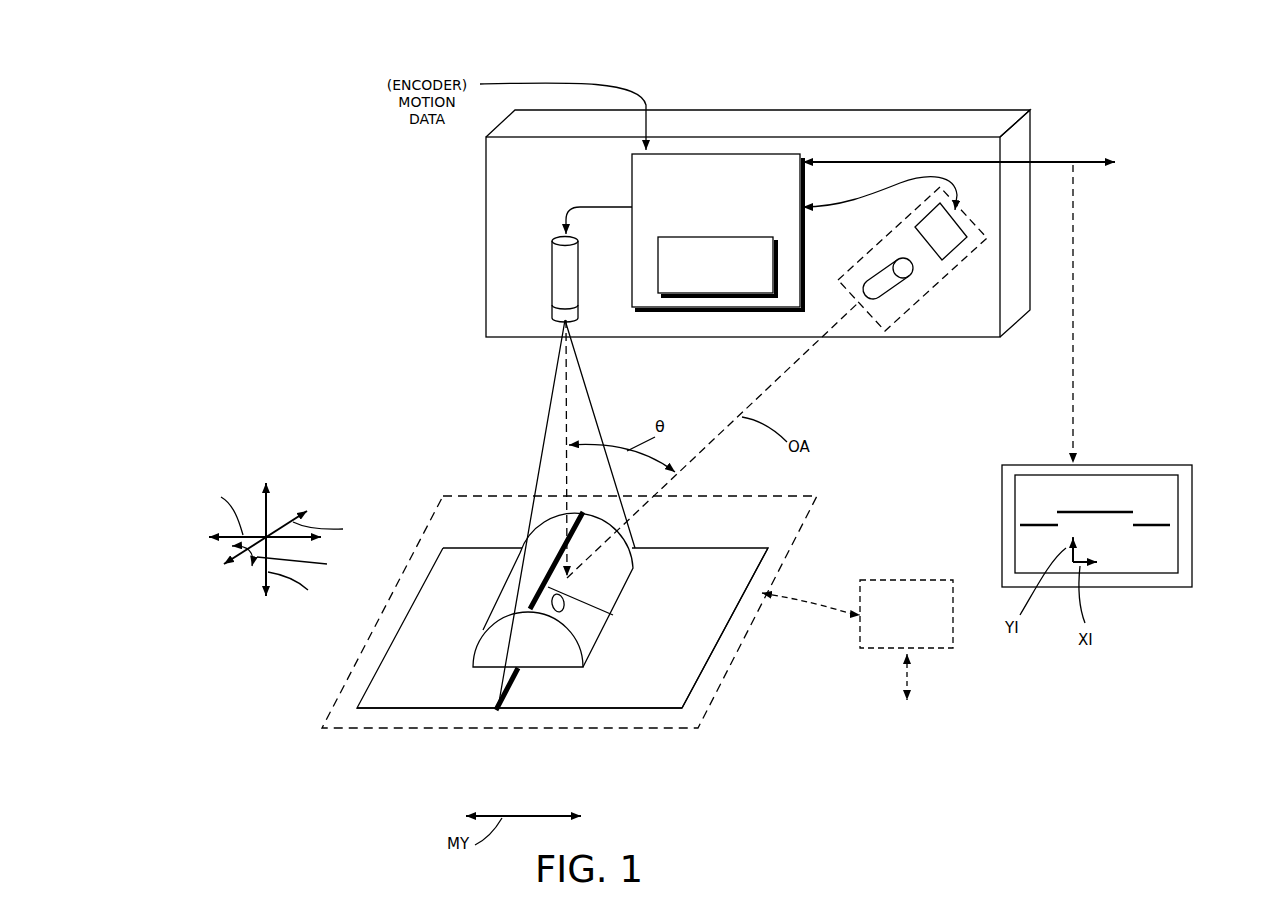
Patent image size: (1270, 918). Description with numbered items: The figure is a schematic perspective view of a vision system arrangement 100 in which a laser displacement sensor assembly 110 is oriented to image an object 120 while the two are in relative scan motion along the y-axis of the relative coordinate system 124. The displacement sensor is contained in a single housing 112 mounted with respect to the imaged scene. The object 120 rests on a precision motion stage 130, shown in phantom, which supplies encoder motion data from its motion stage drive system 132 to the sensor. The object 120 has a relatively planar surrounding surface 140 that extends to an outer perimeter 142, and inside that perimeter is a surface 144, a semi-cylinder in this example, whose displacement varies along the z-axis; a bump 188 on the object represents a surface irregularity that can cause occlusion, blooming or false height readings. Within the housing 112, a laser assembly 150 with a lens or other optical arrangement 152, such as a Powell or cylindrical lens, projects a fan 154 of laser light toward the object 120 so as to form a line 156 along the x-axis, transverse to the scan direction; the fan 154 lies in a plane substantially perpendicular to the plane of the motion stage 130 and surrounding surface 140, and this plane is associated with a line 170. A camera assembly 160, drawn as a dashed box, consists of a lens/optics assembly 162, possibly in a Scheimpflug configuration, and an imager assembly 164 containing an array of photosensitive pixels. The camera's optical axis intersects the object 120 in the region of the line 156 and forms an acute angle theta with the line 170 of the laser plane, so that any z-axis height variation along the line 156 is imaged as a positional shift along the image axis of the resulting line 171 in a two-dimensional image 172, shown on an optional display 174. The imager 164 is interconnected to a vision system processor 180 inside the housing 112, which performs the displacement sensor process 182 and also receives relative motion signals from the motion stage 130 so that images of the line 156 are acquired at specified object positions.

The vision system arrangement 100 is at (1068, 142).
The laser displacement sensor assembly 110 is at (990, 120).
The housing 112 is at (848, 116).
The object 120 is at (756, 544).
The relative coordinate system 124 is at (267, 474).
The precision motion stage 130 is at (795, 541).
The motion stage drive system 132 is at (927, 580).
The surrounding surface 140 is at (712, 556).
The outer perimeter 142 is at (652, 710).
The surface 144 is at (580, 624).
The laser assembly 150 is at (553, 267).
The lens or other optical arrangement 152 is at (553, 308).
The fan of laser light 154 is at (557, 420).
The line 156 is at (604, 613).
The camera assembly 160 is at (884, 331).
The lens/optics assembly 162 is at (893, 288).
The imager assembly 164 is at (953, 247).
The line of the laser fan plane 170 is at (563, 458).
The resulting line 171 is at (1085, 510).
The two-dimensional image 172 is at (1148, 554).
The display 174 is at (1193, 503).
The vision system processor 180 is at (648, 300).
The displacement sensor process 182 is at (748, 285).
The bump 188 is at (555, 608).